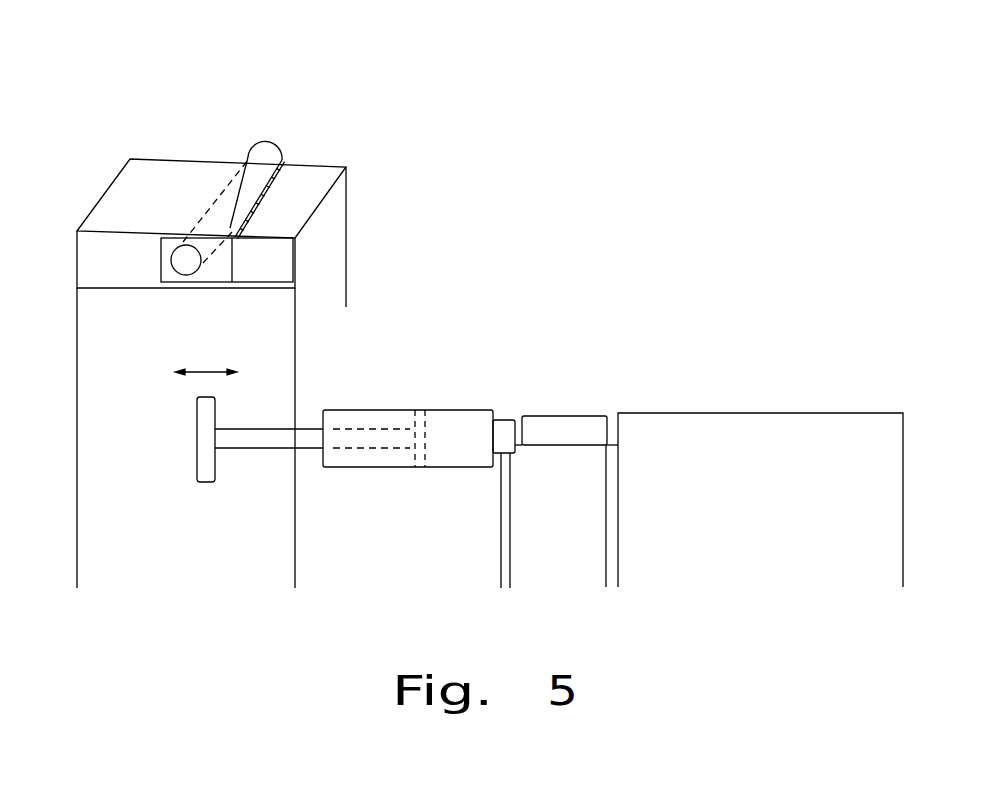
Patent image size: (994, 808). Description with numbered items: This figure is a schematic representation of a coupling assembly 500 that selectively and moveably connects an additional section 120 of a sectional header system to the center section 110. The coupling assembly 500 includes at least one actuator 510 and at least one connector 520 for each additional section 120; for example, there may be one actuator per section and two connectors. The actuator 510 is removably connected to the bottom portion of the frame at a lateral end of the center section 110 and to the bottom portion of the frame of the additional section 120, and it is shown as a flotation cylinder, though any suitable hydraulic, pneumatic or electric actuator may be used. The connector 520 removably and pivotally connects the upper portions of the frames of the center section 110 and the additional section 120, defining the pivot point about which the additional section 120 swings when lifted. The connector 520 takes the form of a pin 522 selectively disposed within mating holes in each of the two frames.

The center section 110 is at (720, 401).
The additional section 120 is at (128, 191).
The coupling assembly 500 is at (248, 560).
The actuator 510 is at (387, 508).
The connector 520 is at (303, 136).
The pin 522 is at (253, 148).